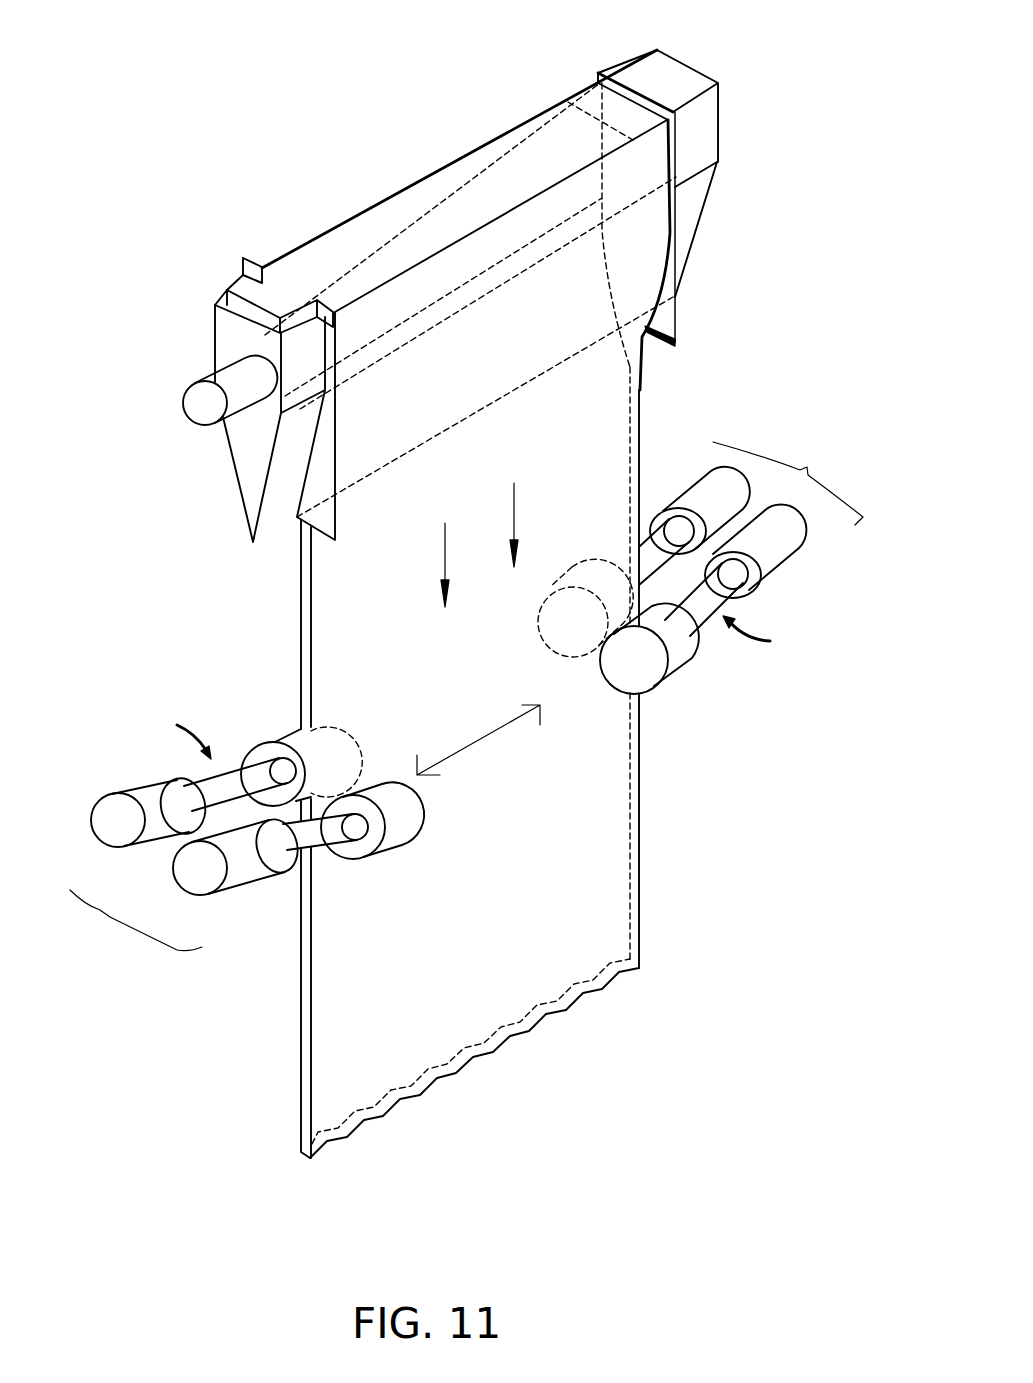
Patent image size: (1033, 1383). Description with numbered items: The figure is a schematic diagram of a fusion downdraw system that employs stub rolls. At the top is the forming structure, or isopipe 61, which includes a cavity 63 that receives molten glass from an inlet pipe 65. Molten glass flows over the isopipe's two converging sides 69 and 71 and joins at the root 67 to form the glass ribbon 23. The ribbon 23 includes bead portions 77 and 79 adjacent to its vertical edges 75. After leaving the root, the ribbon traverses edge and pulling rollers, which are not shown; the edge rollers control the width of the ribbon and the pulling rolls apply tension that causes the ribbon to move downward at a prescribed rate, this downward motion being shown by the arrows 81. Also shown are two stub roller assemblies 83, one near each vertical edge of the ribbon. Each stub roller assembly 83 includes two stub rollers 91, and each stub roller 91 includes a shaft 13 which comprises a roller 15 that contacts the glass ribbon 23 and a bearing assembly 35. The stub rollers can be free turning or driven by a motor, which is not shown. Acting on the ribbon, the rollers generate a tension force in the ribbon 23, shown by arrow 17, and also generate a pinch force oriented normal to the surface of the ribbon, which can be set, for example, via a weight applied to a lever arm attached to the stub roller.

The forming structure (isopipe) 61 is at (742, 40).
The isopipe cavity or trough 63 is at (540, 212).
The inlet pipe 65 is at (202, 403).
The root of isopipe 67 is at (655, 343).
The glass ribbon 23 is at (640, 377).
The converging side of isopipe 69 is at (280, 480).
The converging side of isopipe 71 is at (250, 520).
The vertical edge of glass ribbon 75 is at (300, 1068).
The bead portion of glass ribbon 77 is at (383, 1127).
The bead portion of glass ribbon 79 is at (640, 980).
The arrows representing downward motion of glass ribbon 81 is at (515, 495).
The stub roller assembly 83 is at (466, 692).
The bearing assembly 35 is at (680, 487).
The roller 15 is at (677, 673).
The shaft 13 is at (648, 552).
The tension arrow 17 is at (488, 745).
The stub roller 91 is at (474, 687).